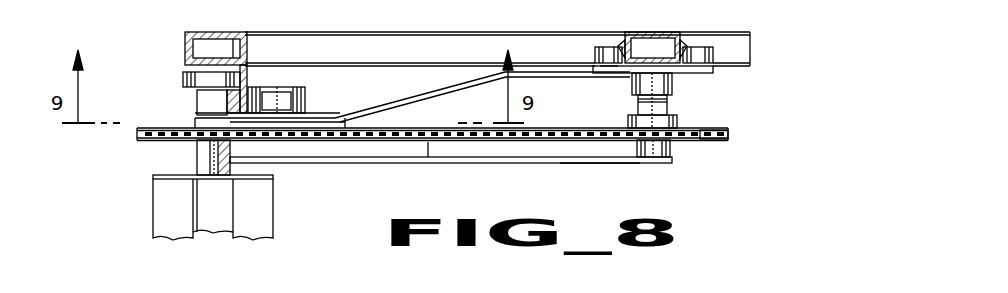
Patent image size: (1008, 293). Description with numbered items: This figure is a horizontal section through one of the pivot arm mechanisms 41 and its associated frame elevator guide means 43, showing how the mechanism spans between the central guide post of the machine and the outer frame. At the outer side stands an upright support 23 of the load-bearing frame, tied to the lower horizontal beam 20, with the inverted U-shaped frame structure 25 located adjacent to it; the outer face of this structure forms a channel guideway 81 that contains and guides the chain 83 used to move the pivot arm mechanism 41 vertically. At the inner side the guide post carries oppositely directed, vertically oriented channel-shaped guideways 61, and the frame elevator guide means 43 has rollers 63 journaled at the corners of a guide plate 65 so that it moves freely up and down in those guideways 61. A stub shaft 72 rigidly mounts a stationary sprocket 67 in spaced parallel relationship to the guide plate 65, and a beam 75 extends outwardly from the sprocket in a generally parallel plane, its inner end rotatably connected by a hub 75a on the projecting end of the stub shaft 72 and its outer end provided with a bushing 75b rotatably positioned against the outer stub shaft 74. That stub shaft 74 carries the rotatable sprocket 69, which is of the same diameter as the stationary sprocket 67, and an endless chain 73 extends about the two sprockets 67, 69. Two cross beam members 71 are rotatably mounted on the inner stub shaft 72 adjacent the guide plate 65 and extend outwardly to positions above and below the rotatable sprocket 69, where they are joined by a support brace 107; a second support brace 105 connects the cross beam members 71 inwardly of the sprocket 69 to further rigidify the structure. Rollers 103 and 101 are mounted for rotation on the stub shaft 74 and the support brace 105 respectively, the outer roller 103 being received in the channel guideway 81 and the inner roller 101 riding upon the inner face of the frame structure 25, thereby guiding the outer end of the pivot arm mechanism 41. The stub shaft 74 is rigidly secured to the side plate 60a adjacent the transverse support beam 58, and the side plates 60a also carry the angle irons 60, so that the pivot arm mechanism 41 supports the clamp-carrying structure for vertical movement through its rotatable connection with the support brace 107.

The horizontal beam 20 is at (440, 32).
The upright support 23 is at (185, 36).
The inverted U-shaped frame structure 25 is at (248, 72).
The pivot arm mechanism 41 is at (590, 166).
The frame elevator guide means 43 is at (716, 70).
The support beam 58 is at (213, 247).
The angle iron 60 is at (156, 232).
The side plate 60a is at (153, 177).
The channel-shaped guideway 61 is at (622, 47).
The roller 63 is at (596, 52).
The guide plate 65 is at (611, 75).
The stationary sprocket 67 is at (700, 139).
The rotatable sprocket 69 is at (137, 134).
The cross beam member 71 is at (438, 93).
The stub shaft 72 is at (668, 107).
The endless chain 73 is at (428, 163).
The stub shaft 74 is at (200, 179).
The beam 75 is at (490, 164).
The hub 75a is at (672, 159).
The bushing 75b is at (210, 150).
The channel guideway 81 is at (234, 46).
The chain 83 is at (230, 108).
The roller 101 is at (296, 90).
The roller 103 is at (185, 75).
The second support brace 105 is at (288, 108).
The support brace 107 is at (197, 96).